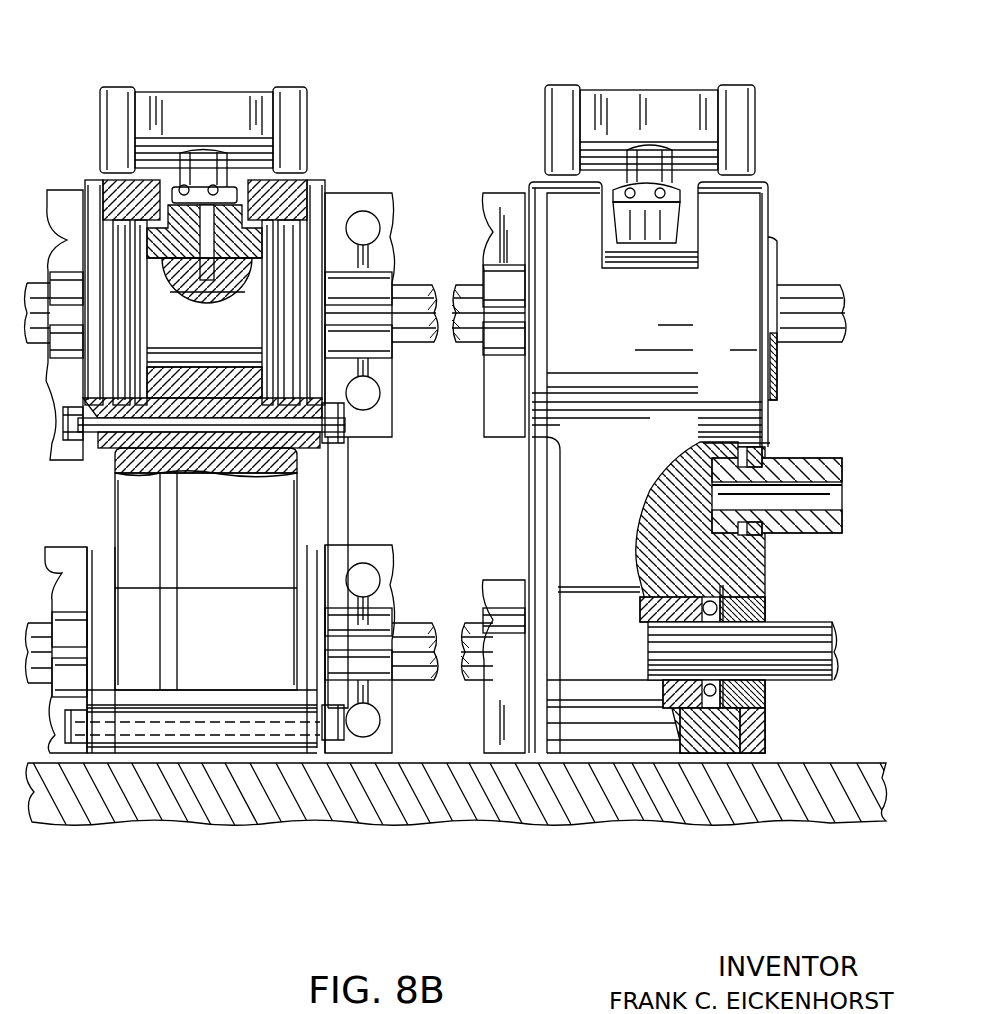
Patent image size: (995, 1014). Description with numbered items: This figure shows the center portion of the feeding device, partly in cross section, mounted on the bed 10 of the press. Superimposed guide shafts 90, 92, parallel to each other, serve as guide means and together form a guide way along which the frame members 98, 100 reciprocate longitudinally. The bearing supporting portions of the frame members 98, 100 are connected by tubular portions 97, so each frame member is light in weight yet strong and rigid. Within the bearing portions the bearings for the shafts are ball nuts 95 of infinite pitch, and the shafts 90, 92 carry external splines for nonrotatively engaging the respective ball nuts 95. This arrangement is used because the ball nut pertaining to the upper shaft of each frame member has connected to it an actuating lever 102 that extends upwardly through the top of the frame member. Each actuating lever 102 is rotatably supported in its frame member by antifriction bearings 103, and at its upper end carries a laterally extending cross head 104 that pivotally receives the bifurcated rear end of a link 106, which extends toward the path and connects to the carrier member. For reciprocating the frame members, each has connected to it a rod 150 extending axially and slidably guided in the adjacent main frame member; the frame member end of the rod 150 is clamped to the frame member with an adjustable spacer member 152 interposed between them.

The bed 10 is at (437, 815).
The shaft 90 is at (463, 287).
The shaft 92 is at (478, 628).
The ball nut 95 is at (224, 341).
The tubular portion 97 is at (63, 558).
The frame member 98 is at (628, 737).
The frame member 100 is at (205, 745).
The actuating lever 102 is at (210, 160).
The antifriction bearing 103 is at (120, 255).
The cross head 104 is at (168, 103).
The link 106 is at (297, 103).
The rod 150 is at (817, 533).
The adjustable spacer member 152 is at (763, 450).